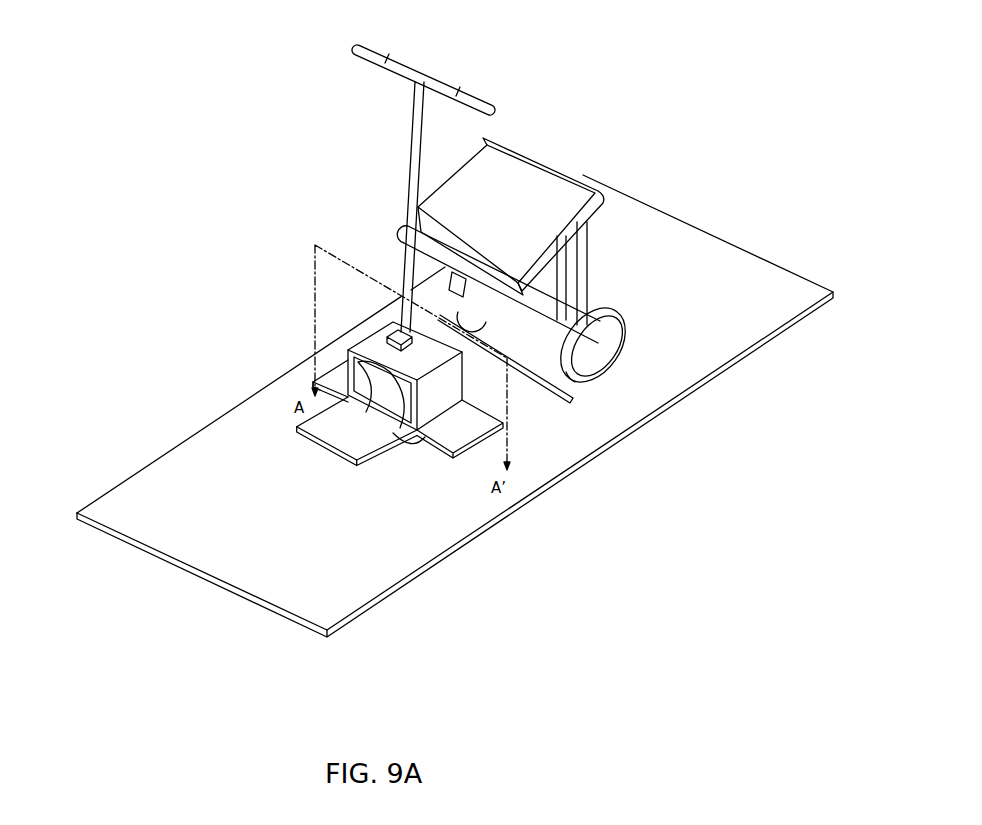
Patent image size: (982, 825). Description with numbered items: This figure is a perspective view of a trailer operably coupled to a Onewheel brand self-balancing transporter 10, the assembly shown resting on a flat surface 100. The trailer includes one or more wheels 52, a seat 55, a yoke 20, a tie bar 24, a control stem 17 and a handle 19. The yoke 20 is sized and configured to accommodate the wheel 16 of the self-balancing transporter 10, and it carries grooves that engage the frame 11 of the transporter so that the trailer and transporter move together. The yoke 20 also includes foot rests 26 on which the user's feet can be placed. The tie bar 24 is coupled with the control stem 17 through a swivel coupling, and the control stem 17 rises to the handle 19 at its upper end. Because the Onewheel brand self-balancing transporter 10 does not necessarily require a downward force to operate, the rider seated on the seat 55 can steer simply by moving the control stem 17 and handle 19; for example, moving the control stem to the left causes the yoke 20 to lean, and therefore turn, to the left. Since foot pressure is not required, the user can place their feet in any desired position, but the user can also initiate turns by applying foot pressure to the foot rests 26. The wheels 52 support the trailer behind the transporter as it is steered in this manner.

The base plate 100 is at (170, 477).
The self-balancing transporter 10 is at (355, 442).
The frame 11 is at (313, 392).
The wheel 16 is at (392, 405).
The yoke 20 is at (370, 350).
The foot rests 26 is at (328, 372).
The control stem 17 is at (403, 260).
The handle 19 is at (413, 68).
The seat 55 is at (548, 200).
The wheels 52 is at (615, 313).
The tie bar 24 is at (573, 398).